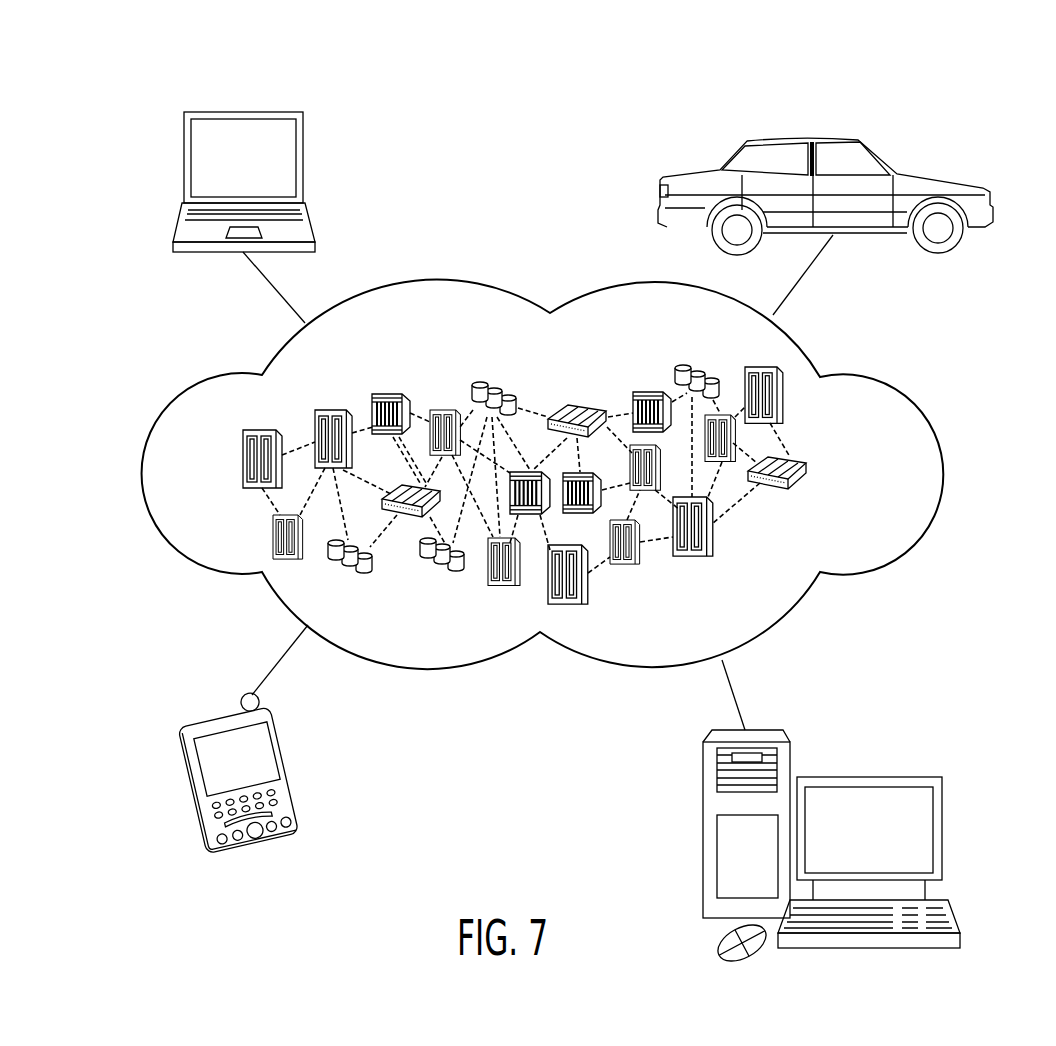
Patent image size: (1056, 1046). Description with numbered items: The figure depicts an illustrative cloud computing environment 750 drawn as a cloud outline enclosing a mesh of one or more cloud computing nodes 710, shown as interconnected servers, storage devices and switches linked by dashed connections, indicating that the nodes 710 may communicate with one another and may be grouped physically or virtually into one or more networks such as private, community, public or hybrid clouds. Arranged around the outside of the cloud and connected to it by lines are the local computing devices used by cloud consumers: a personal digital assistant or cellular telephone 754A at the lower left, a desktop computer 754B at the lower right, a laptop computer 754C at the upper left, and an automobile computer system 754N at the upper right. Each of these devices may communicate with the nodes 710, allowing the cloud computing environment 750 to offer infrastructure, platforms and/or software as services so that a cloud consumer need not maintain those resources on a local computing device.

The cloud computing nodes 710 is at (822, 474).
The cloud computing environment 750 is at (543, 475).
The personal digital assistant (PDA) or cellular telephone 754A is at (222, 712).
The desktop computer 754B is at (868, 775).
The laptop computer 754C is at (243, 110).
The automobile computer system 754N is at (805, 138).